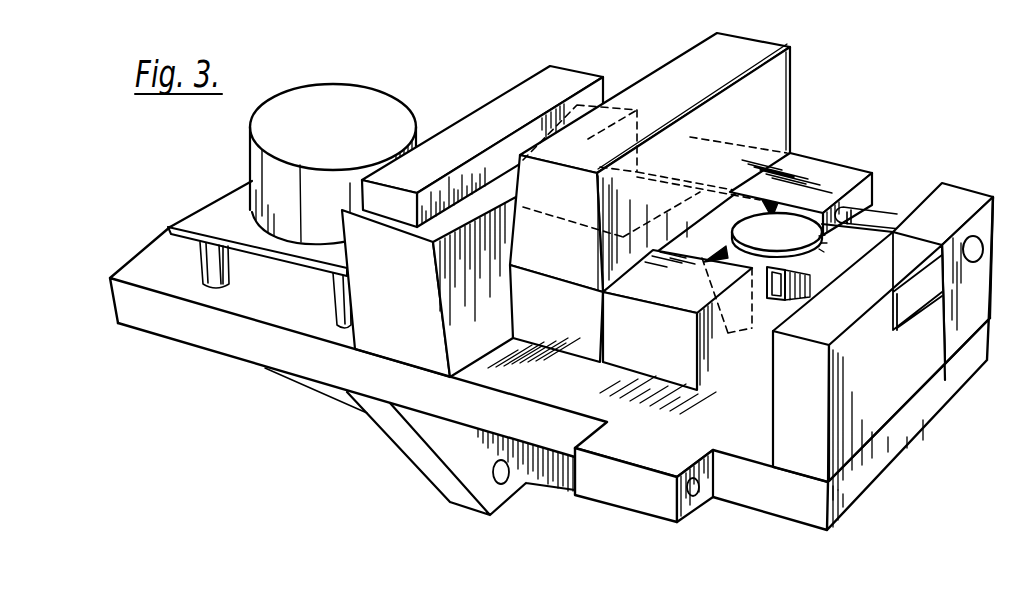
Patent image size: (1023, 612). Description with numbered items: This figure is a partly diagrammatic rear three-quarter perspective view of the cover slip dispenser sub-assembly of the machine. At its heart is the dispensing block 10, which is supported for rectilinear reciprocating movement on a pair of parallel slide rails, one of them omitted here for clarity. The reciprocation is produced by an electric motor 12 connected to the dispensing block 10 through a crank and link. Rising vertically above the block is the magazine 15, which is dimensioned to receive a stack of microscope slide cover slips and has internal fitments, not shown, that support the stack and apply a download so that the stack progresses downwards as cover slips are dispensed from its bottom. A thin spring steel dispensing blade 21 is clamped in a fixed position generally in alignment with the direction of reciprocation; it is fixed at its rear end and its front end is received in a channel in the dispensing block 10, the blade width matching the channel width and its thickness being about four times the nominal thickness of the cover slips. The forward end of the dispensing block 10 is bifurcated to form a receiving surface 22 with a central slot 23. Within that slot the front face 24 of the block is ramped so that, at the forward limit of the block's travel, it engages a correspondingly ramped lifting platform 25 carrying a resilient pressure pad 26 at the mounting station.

The dispensing block 10 is at (679, 372).
The electric motor 12 is at (383, 106).
The magazine 15 is at (777, 100).
The dispensing blade 21 is at (512, 190).
The receiving surface 22 is at (692, 293).
The central slot 23 is at (763, 320).
The front face 24 is at (705, 282).
The lifting platform 25 is at (793, 303).
The resilient pressure pad 26 is at (823, 247).